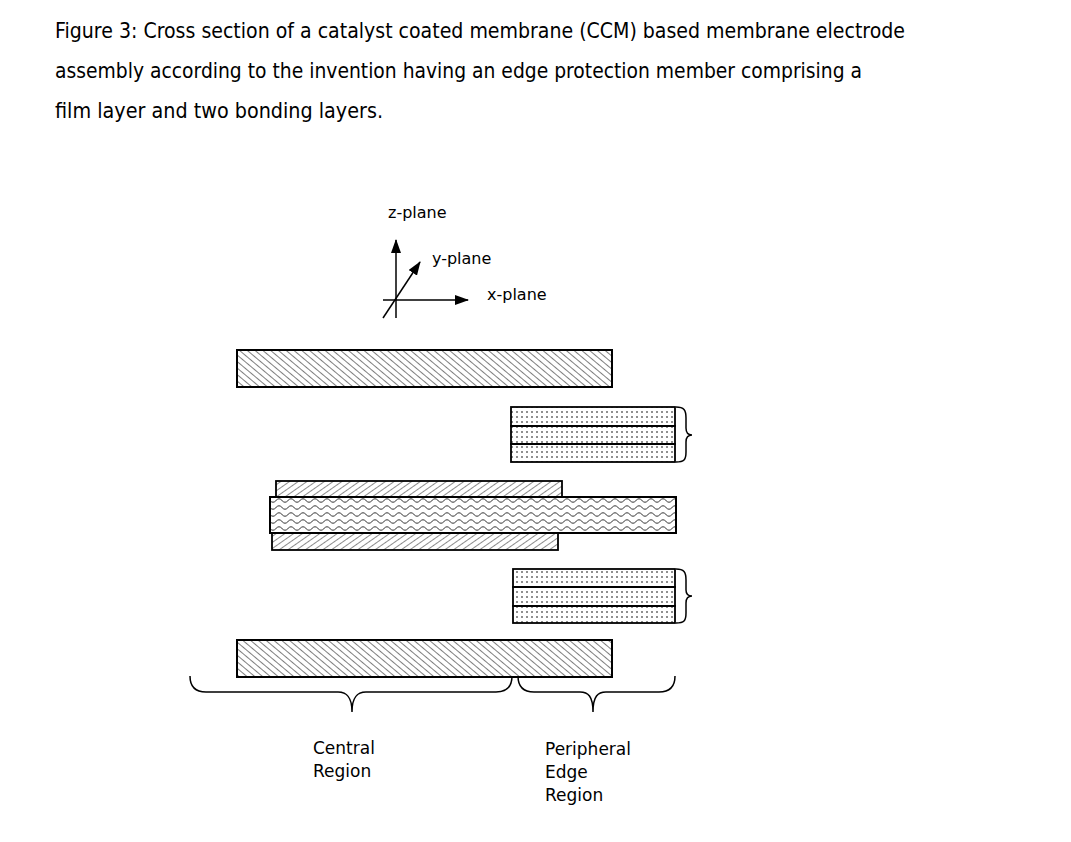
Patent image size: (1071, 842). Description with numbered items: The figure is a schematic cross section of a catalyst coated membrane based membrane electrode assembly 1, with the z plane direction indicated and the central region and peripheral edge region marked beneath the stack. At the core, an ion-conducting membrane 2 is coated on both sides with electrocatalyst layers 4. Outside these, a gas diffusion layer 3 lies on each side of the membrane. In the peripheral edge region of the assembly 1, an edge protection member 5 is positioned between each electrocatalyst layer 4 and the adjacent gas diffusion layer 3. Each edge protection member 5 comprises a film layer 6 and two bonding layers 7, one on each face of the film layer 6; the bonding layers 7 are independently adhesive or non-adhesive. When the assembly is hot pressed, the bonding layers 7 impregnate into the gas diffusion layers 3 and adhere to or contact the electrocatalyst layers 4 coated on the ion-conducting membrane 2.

The CCM based membrane electrode assembly 1 is at (200, 322).
The ion-conducting membrane 2 is at (282, 517).
The gas diffusion layer 3 is at (272, 370).
The electrocatalyst layer 4 is at (308, 489).
The edge protection member 5 is at (632, 507).
The film layer 6 is at (638, 428).
The bonding layer 7 is at (553, 416).